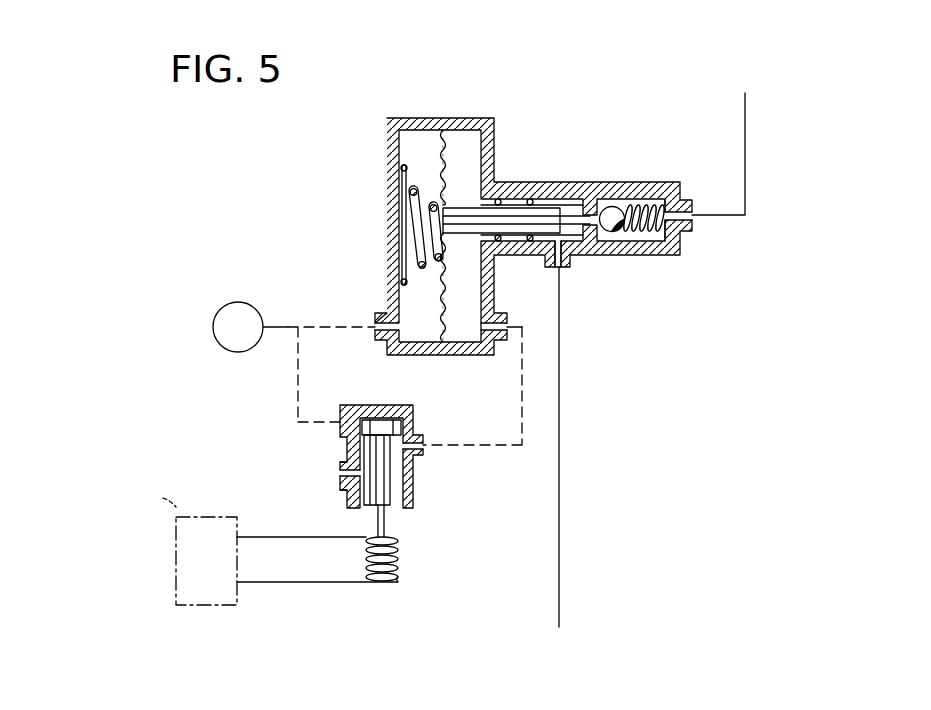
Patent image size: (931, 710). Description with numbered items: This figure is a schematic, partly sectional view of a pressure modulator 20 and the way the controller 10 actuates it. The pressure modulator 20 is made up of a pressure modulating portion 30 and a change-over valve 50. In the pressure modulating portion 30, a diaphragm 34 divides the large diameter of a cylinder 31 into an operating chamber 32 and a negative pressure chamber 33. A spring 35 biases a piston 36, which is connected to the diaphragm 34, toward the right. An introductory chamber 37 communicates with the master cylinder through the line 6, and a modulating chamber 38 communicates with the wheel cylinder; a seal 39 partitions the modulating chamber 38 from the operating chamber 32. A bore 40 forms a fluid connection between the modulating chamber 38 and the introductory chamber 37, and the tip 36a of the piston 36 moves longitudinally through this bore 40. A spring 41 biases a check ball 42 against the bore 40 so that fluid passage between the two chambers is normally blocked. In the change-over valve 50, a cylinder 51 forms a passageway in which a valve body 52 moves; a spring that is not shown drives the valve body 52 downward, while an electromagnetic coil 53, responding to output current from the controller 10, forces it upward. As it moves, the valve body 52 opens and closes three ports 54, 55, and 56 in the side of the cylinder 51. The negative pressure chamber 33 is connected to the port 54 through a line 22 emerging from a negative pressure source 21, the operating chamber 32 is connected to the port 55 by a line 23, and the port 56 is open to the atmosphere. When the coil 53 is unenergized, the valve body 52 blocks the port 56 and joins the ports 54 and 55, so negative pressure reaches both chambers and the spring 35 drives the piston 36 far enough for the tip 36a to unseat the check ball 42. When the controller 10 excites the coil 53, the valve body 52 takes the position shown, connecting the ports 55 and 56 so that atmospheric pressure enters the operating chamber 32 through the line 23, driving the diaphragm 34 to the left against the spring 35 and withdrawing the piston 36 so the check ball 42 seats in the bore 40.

The line 6 is at (745, 134).
The controller 10 is at (190, 516).
The pressure modulator 20 is at (542, 65).
The negative pressure source 21 is at (257, 280).
The line 22 is at (314, 356).
The line 23 is at (519, 365).
The pressure modulating portion 30 is at (637, 330).
The cylinder 31 is at (494, 128).
The operating chamber 32 is at (466, 140).
The negative pressure chamber 33 is at (413, 137).
The diaphragm 34 is at (425, 147).
The spring 35 is at (398, 186).
The piston 36 is at (515, 216).
The tip 36a is at (588, 212).
The introductory chamber 37 is at (647, 205).
The modulating chamber 38 is at (570, 210).
The seal 39 is at (530, 198).
The bore 40 is at (586, 228).
The spring 41 is at (667, 242).
The check ball 42 is at (630, 231).
The change-over valve 50 is at (492, 527).
The cylinder 51 is at (400, 405).
The valve body 52 is at (396, 426).
The electromagnetic coil 53 is at (396, 557).
The port 54 is at (346, 428).
The port 55 is at (423, 449).
The port 56 is at (341, 477).